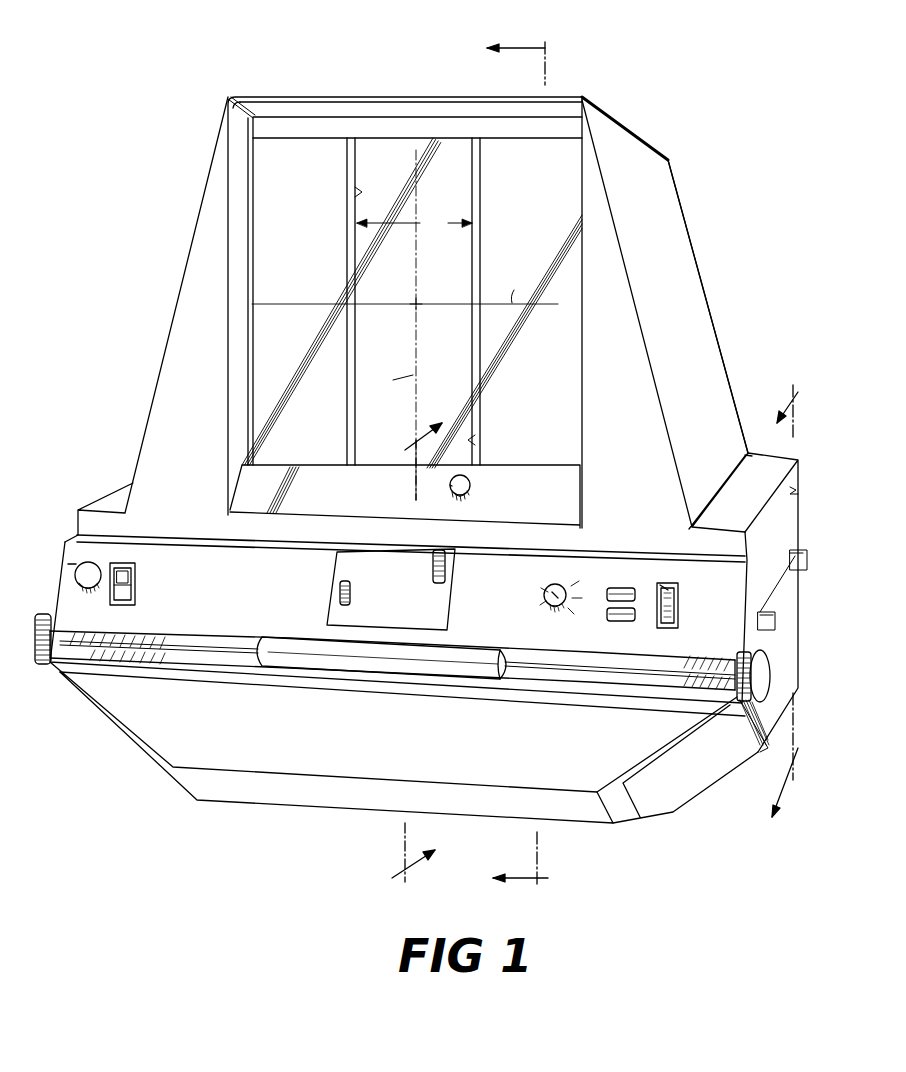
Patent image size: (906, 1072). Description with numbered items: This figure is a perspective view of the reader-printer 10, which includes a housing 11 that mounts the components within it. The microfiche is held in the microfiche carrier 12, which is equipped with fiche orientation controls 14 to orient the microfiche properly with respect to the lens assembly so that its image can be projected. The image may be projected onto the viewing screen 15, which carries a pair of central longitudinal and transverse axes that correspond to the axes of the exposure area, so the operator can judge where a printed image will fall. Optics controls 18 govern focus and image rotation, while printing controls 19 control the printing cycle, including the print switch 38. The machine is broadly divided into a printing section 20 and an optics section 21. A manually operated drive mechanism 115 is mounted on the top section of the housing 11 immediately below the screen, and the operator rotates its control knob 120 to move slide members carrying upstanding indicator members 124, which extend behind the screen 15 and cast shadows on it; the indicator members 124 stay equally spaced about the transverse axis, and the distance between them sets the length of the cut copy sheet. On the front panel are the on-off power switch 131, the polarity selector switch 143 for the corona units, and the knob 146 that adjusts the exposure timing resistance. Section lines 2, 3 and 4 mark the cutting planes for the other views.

The section line 2- 2 is at (421, 640).
The section line 3- 3 is at (506, 469).
The section line 4- 4 is at (775, 601).
The reader-printer 10 is at (648, 138).
The housing 11 is at (749, 452).
The microfiche carrier 12 is at (289, 622).
The fiche orientation controls 14 is at (39, 614).
The viewing screen 15 is at (562, 392).
The optics controls 18 is at (432, 566).
The printing controls 19 is at (551, 612).
The printing section 20 is at (793, 602).
The optics section 21 is at (720, 388).
The on-off switch 38 is at (680, 612).
The drive mechanism 115 is at (451, 491).
The control knob 120 is at (471, 492).
The indicator members 124 is at (354, 199).
The power switch 131 is at (137, 578).
The polarity selector switch 143 is at (75, 569).
The knob 146 is at (549, 588).